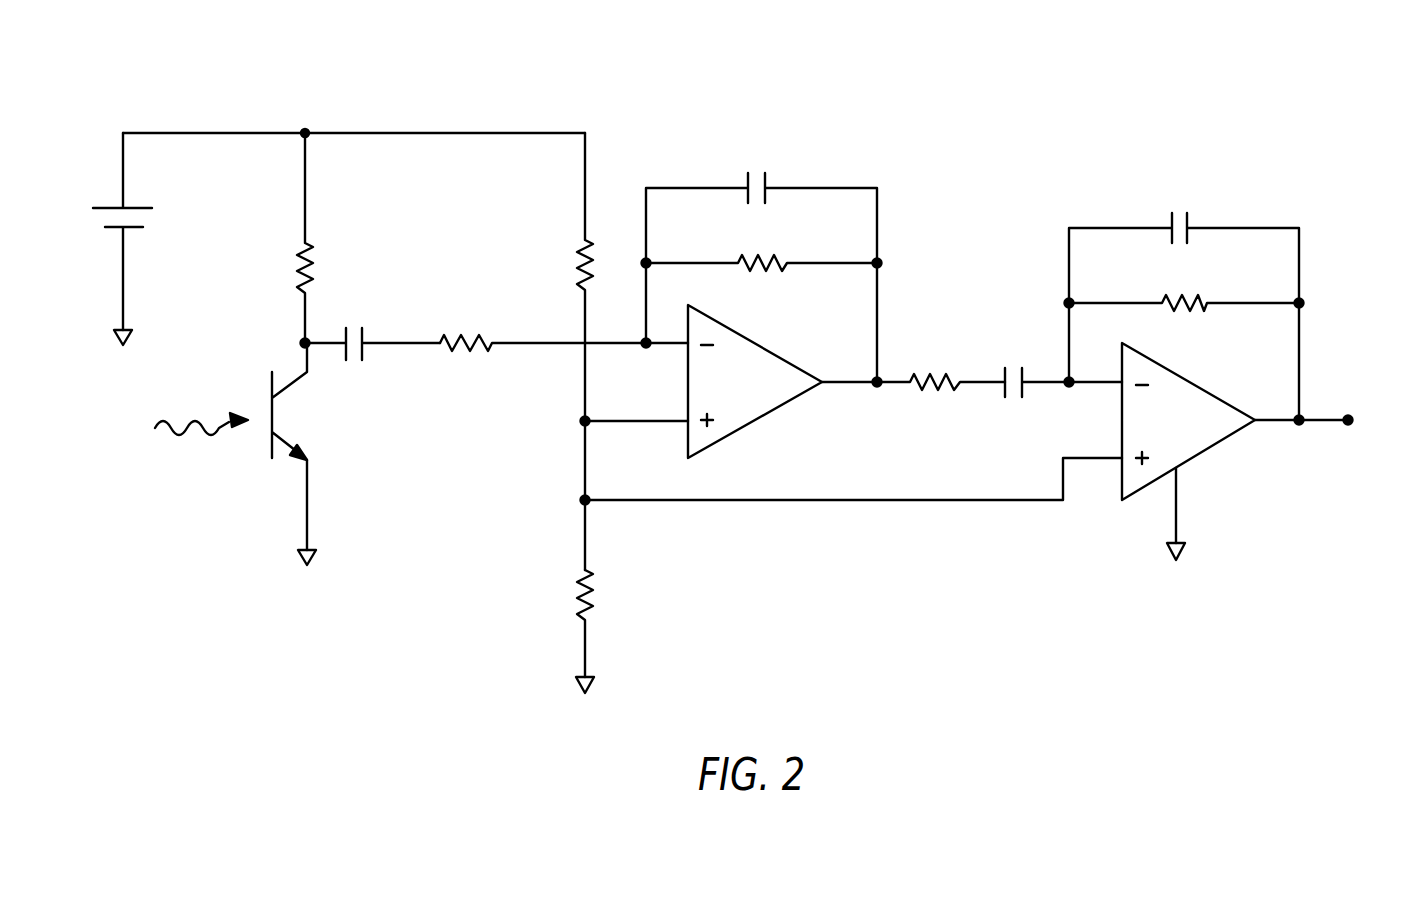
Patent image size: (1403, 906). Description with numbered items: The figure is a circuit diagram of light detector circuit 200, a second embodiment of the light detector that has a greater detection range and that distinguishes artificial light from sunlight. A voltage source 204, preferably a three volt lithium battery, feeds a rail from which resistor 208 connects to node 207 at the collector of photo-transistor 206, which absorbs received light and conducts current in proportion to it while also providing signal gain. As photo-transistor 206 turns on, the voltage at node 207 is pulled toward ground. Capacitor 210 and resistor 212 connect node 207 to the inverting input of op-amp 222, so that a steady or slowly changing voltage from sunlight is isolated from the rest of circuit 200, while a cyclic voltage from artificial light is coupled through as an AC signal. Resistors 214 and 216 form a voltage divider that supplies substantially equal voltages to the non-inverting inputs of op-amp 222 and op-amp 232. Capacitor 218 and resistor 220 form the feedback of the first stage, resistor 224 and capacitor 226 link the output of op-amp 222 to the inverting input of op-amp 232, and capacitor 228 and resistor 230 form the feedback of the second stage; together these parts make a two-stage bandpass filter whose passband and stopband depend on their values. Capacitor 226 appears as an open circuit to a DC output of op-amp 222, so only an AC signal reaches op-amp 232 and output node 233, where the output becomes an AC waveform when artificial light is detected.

The light detector circuit 200 is at (1295, 120).
The voltage source 204 is at (145, 217).
The photo-transistor 206 is at (271, 445).
The node 207 is at (303, 343).
The resistor 208 is at (312, 256).
The capacitor 210 is at (357, 372).
The resistor 212 is at (463, 342).
The resistor 214 is at (575, 250).
The resistor 216 is at (599, 598).
The capacitor 218 is at (760, 165).
The resistor 220 is at (769, 268).
The op-amp 222 is at (770, 402).
The resistor 224 is at (936, 378).
The capacitor 226 is at (1007, 405).
The capacitor 228 is at (1181, 205).
The resistor 230 is at (1194, 312).
The op-amp 232 is at (1218, 445).
The output node 233 is at (1350, 416).